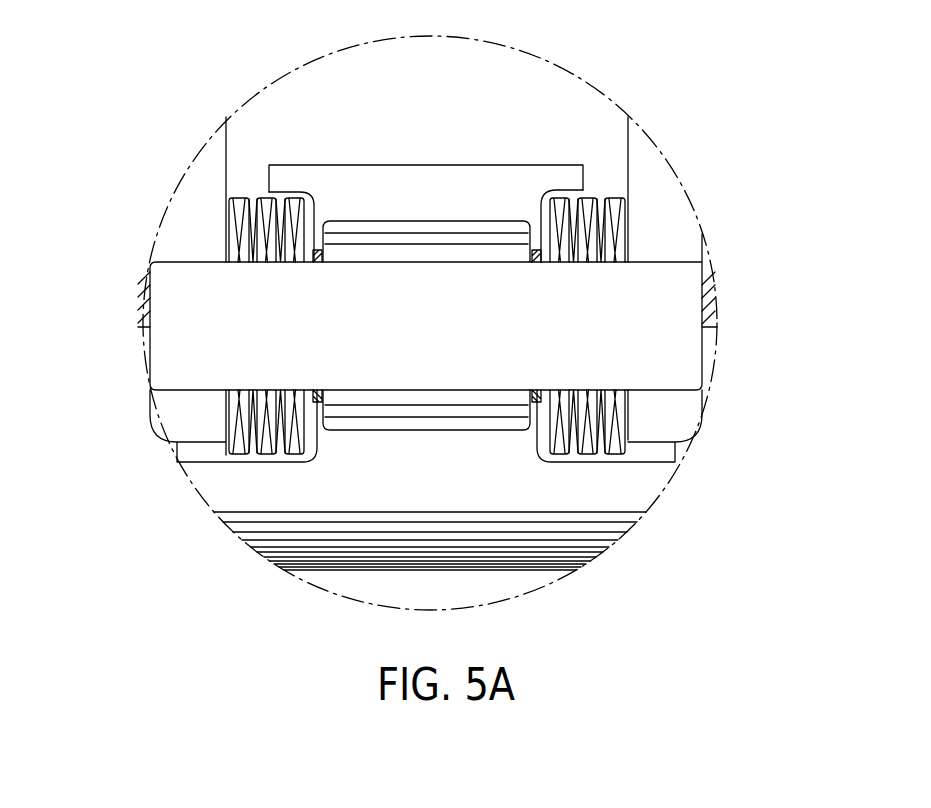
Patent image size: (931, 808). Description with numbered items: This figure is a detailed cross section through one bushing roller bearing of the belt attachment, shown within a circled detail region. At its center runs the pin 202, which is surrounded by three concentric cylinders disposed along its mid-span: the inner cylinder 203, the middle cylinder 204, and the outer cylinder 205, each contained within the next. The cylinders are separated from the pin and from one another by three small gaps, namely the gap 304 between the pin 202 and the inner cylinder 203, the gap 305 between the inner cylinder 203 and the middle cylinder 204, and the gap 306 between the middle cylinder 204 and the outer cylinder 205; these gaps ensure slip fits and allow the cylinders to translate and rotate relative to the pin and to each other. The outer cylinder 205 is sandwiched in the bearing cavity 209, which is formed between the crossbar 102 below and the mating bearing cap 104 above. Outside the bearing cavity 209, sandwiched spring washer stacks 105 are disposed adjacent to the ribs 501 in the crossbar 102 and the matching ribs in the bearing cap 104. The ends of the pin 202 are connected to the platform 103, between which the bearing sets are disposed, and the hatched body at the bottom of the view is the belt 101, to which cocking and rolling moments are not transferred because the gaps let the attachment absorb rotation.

The belt 101 is at (463, 543).
The crossbar 102 is at (262, 490).
The platform 103 is at (192, 213).
The bearing cap 104 is at (323, 183).
The spring washer stack 105 is at (610, 207).
The pin 202 is at (197, 333).
The inner cylinder 203 is at (503, 253).
The middle cylinder 204 is at (492, 238).
The outer cylinder 205 is at (357, 225).
The bearing cavity 209 is at (332, 246).
The gap 304 is at (330, 425).
The gap 305 is at (352, 410).
The gap 306 is at (508, 418).
The rib 501 is at (537, 410).